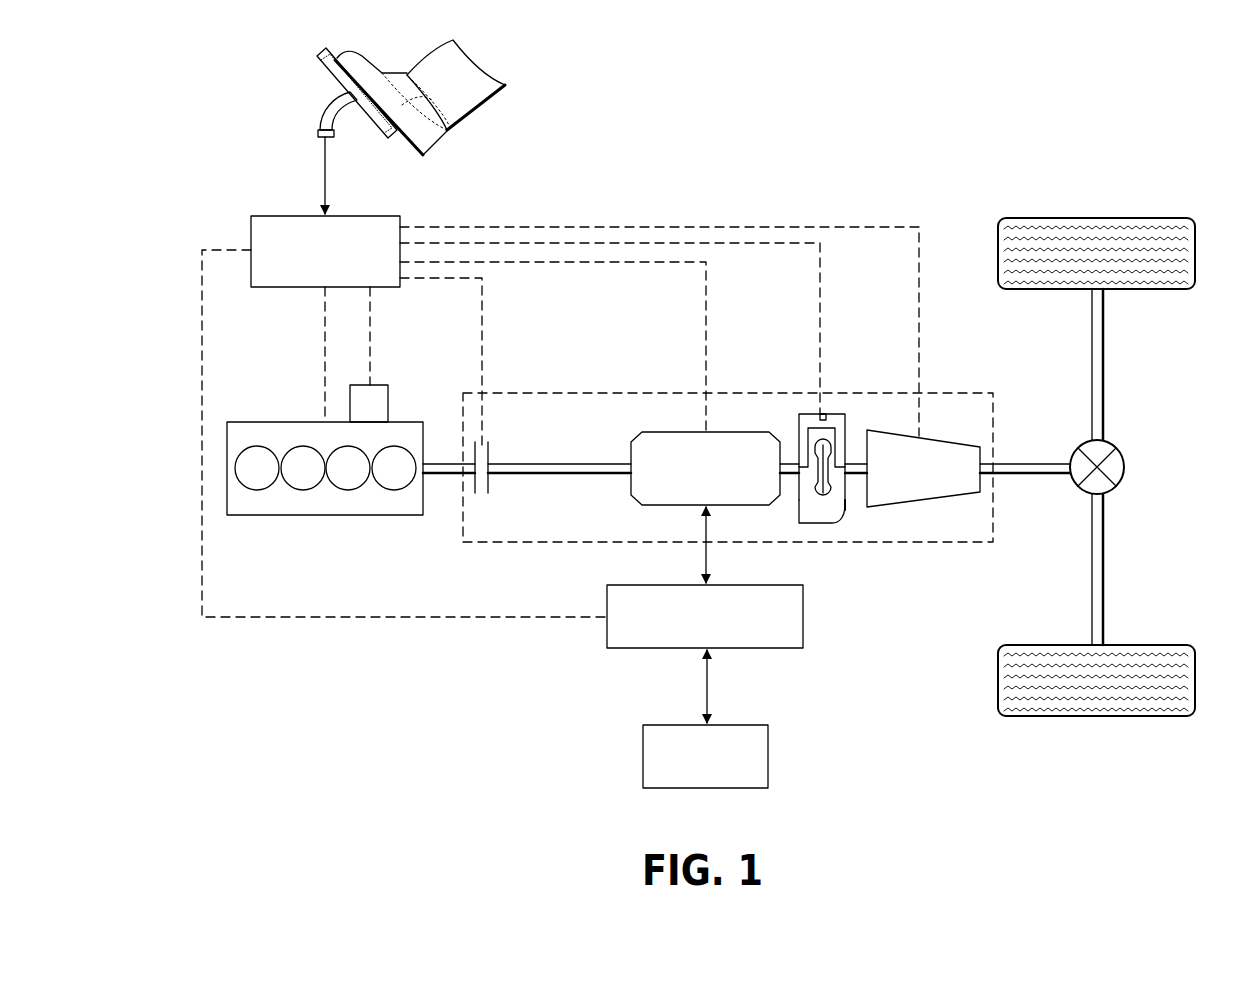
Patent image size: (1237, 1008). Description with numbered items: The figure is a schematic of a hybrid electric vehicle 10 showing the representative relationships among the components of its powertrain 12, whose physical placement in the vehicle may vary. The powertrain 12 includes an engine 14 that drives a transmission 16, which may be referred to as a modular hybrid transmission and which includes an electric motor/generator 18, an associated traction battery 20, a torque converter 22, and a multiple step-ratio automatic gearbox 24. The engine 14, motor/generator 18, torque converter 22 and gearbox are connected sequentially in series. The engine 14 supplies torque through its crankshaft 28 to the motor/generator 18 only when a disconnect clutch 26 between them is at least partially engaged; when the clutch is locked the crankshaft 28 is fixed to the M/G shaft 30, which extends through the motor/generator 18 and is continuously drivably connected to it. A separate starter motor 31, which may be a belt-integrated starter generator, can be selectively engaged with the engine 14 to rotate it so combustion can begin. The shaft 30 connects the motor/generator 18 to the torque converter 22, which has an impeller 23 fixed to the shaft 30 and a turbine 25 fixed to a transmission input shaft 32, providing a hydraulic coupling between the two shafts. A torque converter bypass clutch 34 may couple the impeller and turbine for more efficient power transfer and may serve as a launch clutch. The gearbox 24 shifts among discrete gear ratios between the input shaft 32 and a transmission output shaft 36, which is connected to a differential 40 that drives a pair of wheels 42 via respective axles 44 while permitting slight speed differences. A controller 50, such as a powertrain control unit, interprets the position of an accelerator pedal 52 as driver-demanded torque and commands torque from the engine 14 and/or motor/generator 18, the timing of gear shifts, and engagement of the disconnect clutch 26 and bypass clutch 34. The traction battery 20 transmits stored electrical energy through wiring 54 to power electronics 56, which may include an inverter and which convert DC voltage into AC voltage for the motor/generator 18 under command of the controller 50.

The hybrid electric vehicle 10 is at (856, 132).
The powertrain 12 is at (466, 647).
The engine 14 is at (280, 422).
The transmission 16 is at (785, 392).
The electric motor/generator 18 is at (673, 432).
The traction battery 20 is at (768, 755).
The torque converter 22 is at (818, 524).
The impeller 23 is at (845, 505).
The gearbox 24 is at (923, 505).
The turbine 25 is at (800, 503).
The disconnect clutch 26 is at (490, 455).
The crankshaft 28 is at (456, 460).
The M/G shaft 30 is at (573, 463).
The starter motor 31 is at (378, 385).
The transmission input shaft 32 is at (855, 458).
The torque converter bypass clutch 34 is at (827, 413).
The transmission output shaft 36 is at (1037, 462).
The differential 40 is at (1125, 466).
The wheels 42 is at (1098, 218).
The axles 44 is at (1104, 367).
The controller 50 is at (287, 216).
The accelerator pedal 52 is at (333, 90).
The wiring 54 is at (707, 693).
The power electronics 56 is at (803, 615).